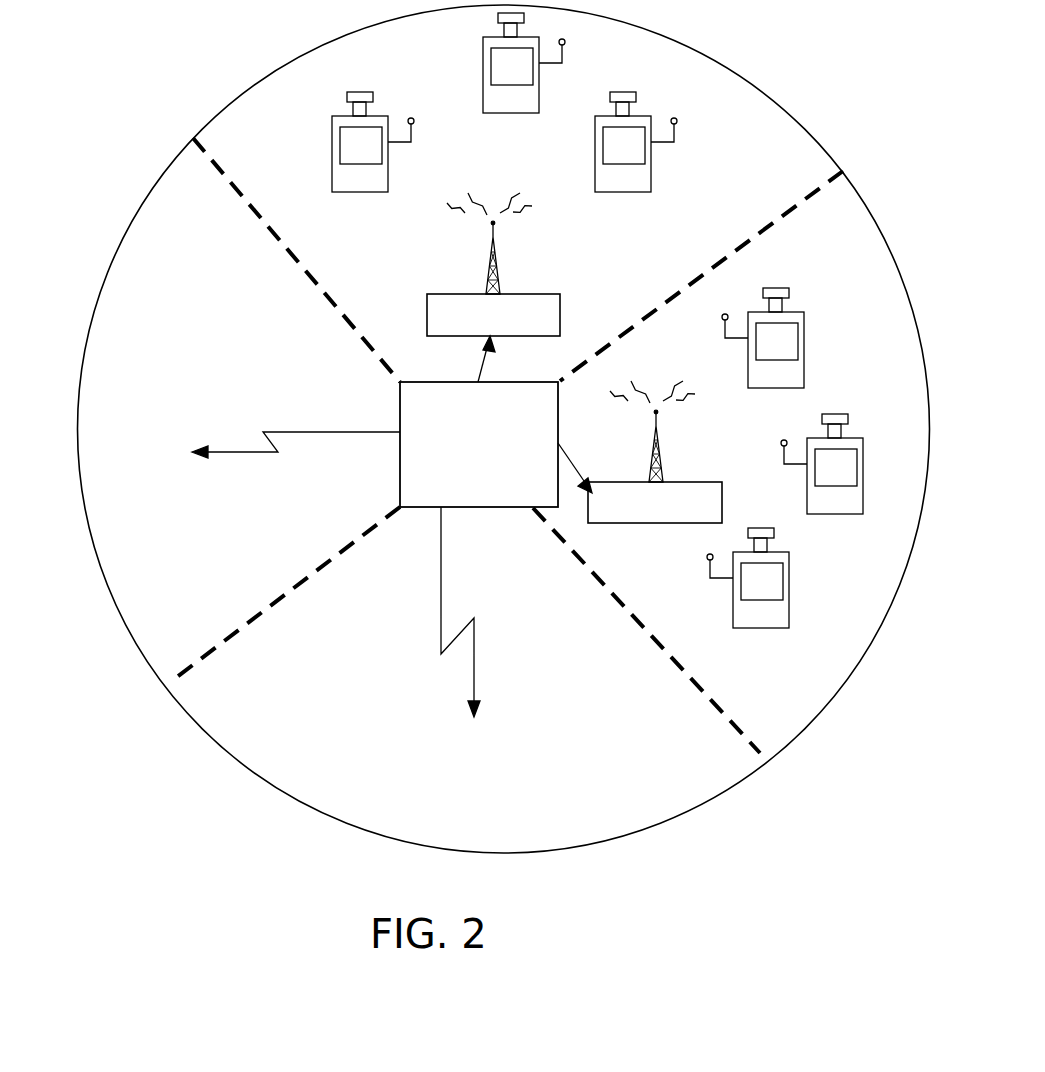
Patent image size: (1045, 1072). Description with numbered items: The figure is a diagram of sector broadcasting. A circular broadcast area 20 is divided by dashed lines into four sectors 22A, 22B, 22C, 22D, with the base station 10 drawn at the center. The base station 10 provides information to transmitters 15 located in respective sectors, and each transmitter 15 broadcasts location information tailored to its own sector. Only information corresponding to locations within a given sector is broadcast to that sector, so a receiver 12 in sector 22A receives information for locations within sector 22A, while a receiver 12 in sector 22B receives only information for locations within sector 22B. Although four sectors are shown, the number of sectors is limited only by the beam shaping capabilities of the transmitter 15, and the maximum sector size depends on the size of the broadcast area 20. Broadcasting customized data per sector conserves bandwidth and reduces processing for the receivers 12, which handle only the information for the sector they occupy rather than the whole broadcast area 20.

The base station 10 is at (392, 526).
The receiver 12 is at (332, 152).
The transmitter 15 is at (560, 312).
The broadcast area 20 is at (736, 62).
The sector 22A is at (272, 118).
The sector 22B is at (825, 268).
The sector 22C is at (589, 812).
The sector 22D is at (150, 573).